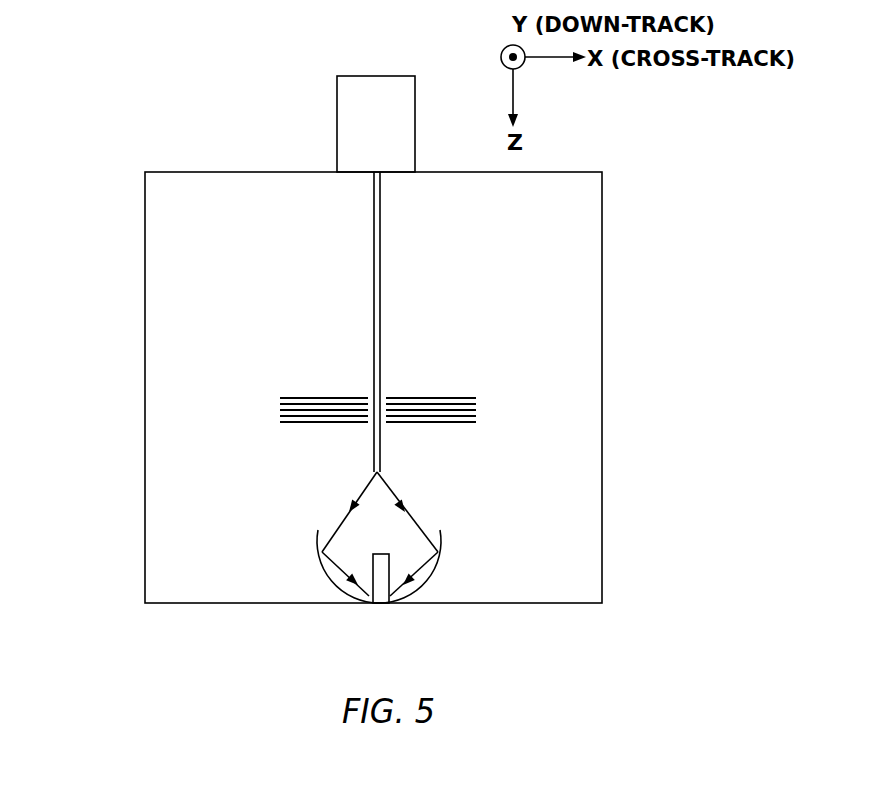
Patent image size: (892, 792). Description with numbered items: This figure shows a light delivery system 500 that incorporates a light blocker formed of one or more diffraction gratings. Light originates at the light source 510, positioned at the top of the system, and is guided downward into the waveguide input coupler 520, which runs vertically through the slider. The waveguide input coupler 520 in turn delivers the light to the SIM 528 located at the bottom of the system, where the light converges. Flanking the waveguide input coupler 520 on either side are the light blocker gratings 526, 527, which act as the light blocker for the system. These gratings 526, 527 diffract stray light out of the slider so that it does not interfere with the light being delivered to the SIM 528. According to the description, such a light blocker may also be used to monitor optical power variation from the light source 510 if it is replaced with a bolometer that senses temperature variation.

The light delivery system 500 is at (124, 38).
The light source 510 is at (395, 135).
The waveguide input coupler 520 is at (382, 263).
The light blocker grating 526 is at (265, 403).
The light blocker grating 527 is at (490, 405).
The SIM 528 is at (432, 578).